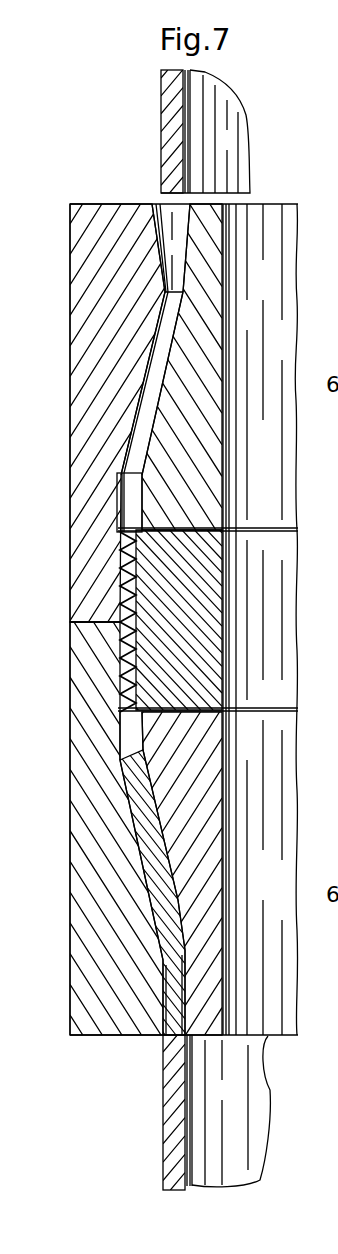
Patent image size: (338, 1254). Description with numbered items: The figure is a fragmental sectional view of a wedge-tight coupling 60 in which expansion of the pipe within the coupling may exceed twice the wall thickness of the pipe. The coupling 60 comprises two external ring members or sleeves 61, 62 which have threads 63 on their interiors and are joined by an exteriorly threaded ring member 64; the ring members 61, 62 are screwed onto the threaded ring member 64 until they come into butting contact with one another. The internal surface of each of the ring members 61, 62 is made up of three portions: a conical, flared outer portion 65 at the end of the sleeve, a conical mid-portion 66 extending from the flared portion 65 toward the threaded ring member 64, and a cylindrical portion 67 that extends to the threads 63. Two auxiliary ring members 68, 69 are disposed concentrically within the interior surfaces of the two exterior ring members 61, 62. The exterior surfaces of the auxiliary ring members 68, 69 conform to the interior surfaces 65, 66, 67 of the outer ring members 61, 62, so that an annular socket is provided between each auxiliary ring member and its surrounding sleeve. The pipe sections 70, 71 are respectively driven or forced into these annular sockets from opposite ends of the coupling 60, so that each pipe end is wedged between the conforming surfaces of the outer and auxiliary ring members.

The coupling 60 is at (72, 715).
The external ring member 61 is at (89, 543).
The external ring member 62 is at (105, 838).
The threads 63 is at (125, 598).
The exteriorly threaded ring member 64 is at (200, 585).
The conical flared outer portion 65 is at (162, 262).
The conical mid-portion 66 is at (150, 370).
The cylindrical portion 67 is at (120, 490).
The auxiliary ring member 68 is at (215, 455).
The auxiliary ring member 69 is at (205, 770).
The pipe section 70 is at (166, 181).
The pipe section 71 is at (176, 1132).